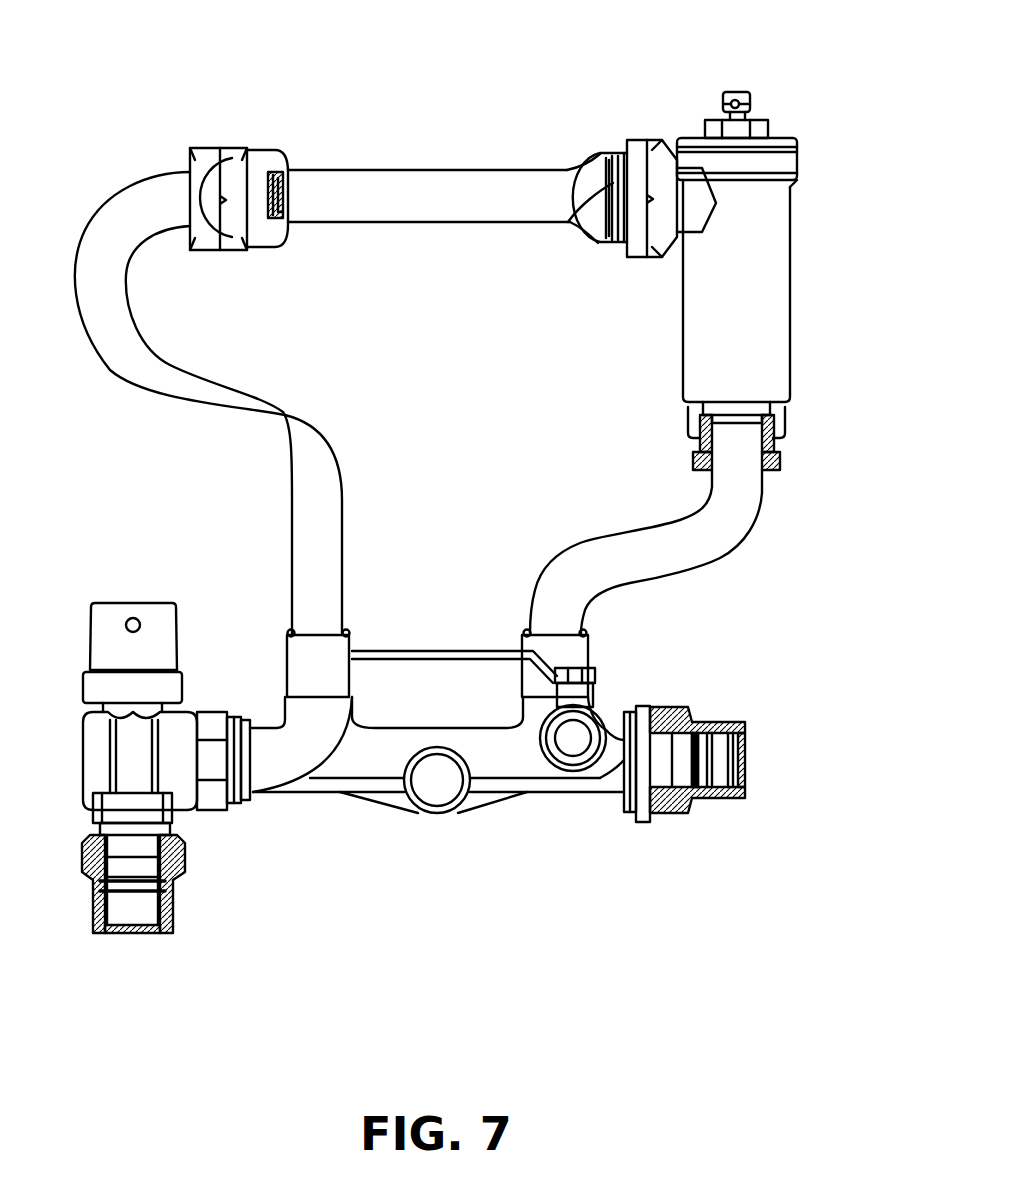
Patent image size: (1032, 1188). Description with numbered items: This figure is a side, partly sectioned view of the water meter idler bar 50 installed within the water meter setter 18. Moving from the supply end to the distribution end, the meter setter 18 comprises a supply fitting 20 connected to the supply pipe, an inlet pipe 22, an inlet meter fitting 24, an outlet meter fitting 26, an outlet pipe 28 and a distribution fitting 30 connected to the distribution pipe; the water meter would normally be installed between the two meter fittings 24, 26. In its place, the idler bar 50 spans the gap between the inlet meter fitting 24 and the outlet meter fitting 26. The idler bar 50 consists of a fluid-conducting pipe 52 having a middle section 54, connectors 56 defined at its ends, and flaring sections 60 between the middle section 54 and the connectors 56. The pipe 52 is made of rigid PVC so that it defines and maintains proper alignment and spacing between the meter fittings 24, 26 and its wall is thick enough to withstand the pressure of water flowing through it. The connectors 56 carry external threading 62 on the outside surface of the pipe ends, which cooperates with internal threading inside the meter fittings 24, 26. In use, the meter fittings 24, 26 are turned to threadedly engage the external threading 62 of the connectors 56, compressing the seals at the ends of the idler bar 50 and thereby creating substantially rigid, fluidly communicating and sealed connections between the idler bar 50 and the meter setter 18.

The meter setter 18 is at (822, 92).
The supply fitting 20 is at (175, 900).
The inlet pipe 22 is at (305, 410).
The inlet meter fitting 24 is at (212, 145).
The outlet meter fitting 26 is at (642, 140).
The outlet pipe 28 is at (738, 548).
The distribution fitting 30 is at (707, 800).
The water meter idler bar 50 is at (436, 147).
The fluid-conducting pipe 52 is at (472, 183).
The middle section 54 is at (436, 162).
The connectors 56 is at (263, 148).
The flaring sections 60 is at (280, 153).
The external threading 62 is at (278, 185).